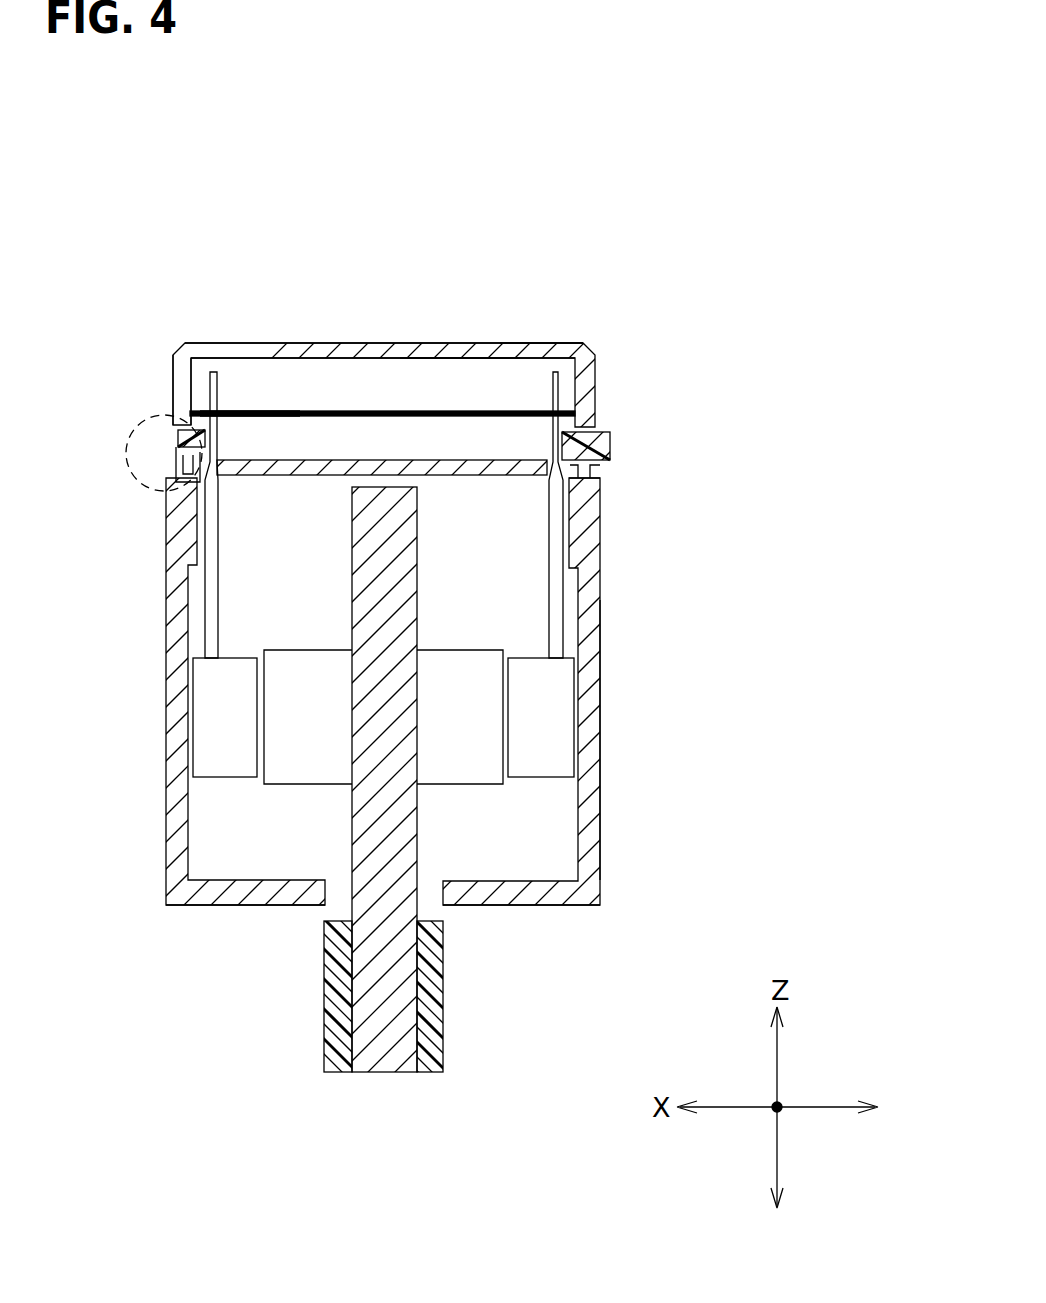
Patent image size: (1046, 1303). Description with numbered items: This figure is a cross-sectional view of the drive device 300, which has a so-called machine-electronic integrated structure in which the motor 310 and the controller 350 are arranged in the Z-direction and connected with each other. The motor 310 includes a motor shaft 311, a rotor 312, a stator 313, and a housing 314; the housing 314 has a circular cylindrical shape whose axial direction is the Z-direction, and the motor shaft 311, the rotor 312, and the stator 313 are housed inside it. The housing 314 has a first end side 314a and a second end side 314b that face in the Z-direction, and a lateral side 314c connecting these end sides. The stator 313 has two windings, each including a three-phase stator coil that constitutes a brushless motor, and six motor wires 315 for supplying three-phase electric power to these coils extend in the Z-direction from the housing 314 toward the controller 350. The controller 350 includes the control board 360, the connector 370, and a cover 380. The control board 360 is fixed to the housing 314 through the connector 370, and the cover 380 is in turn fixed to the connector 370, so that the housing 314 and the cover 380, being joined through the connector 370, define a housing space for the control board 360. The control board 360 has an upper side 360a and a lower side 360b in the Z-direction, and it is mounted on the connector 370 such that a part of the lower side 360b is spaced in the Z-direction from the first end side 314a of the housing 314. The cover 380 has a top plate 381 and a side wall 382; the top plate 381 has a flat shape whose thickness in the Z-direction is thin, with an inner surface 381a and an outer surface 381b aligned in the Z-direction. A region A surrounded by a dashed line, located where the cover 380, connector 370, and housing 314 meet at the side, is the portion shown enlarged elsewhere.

The drive device 300 is at (708, 268).
The motor 310 is at (687, 612).
The motor shaft 311 is at (417, 638).
The rotor 312 is at (504, 707).
The stator 313 is at (576, 673).
The housing 314 is at (600, 743).
The first end side 314a is at (592, 432).
The second end side 314b is at (530, 905).
The lateral side 314c is at (600, 787).
The motor wires 315 is at (563, 541).
The controller 350 is at (733, 333).
The control board 360 is at (572, 411).
The upper side 360a is at (235, 411).
The lower side 360b is at (235, 416).
The connector 370 is at (610, 455).
The cover 380 is at (596, 362).
The top plate 381 is at (214, 343).
The inner surface 381a is at (440, 360).
The outer surface 381b is at (563, 343).
The side wall 382 is at (173, 375).
The region A is at (152, 416).